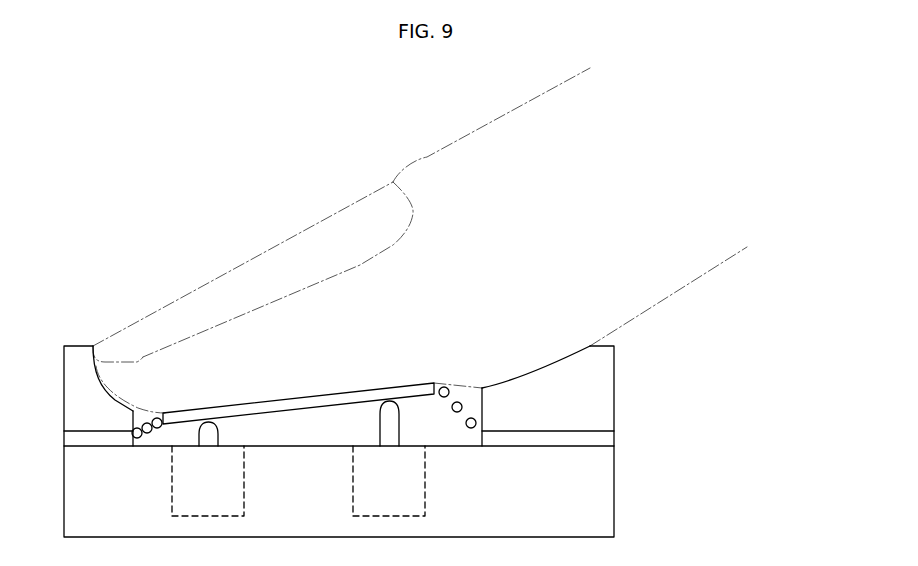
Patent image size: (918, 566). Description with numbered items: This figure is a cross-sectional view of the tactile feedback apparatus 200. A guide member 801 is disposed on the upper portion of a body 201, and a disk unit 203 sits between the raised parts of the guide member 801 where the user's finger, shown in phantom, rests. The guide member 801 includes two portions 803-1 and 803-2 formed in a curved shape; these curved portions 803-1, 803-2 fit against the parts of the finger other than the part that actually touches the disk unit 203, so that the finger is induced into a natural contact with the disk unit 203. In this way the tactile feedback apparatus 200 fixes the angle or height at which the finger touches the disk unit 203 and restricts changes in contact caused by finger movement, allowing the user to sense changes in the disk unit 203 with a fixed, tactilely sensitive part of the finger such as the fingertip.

The tactile feedback apparatus 200 is at (675, 337).
The body 201 is at (600, 496).
The disk unit 203 is at (295, 403).
The guide member 801 is at (600, 392).
The curved portion 803-1 is at (113, 400).
The curved portion 803-2 is at (550, 362).